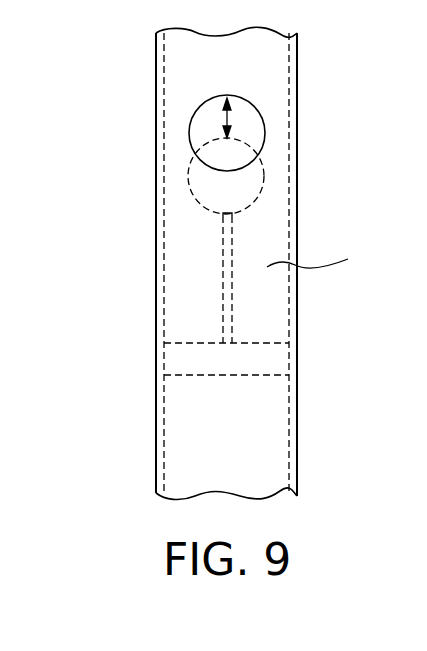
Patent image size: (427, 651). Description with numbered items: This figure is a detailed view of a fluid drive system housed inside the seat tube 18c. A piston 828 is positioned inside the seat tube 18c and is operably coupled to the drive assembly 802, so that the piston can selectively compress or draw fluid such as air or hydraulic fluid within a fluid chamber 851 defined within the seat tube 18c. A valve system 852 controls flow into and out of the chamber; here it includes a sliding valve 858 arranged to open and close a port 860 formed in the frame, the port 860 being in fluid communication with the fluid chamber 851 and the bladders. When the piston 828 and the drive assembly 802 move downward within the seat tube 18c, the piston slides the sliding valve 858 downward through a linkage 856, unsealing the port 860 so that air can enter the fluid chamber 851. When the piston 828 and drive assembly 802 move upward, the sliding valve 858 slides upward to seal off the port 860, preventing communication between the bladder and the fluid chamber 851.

The seat tube 18c is at (158, 60).
The drive assembly 802 is at (177, 441).
The piston 828 is at (192, 356).
The fluid chamber 851 is at (333, 258).
The valve system 852 is at (262, 104).
The linkage 856 is at (225, 270).
The sliding valve 858 is at (200, 185).
The port 860 is at (205, 127).